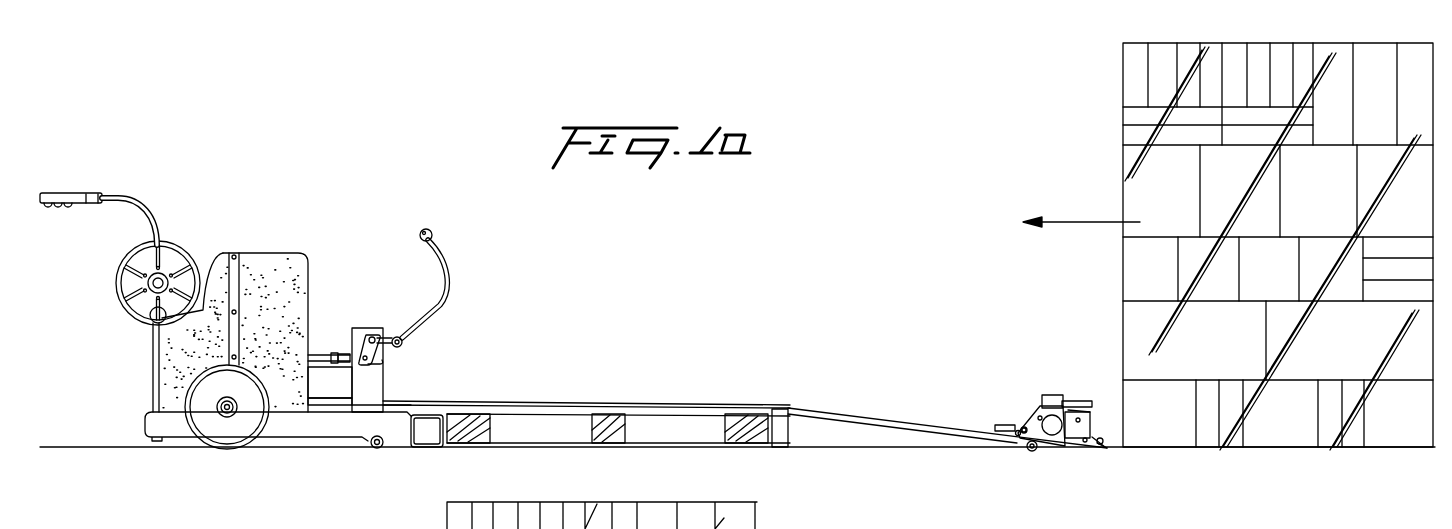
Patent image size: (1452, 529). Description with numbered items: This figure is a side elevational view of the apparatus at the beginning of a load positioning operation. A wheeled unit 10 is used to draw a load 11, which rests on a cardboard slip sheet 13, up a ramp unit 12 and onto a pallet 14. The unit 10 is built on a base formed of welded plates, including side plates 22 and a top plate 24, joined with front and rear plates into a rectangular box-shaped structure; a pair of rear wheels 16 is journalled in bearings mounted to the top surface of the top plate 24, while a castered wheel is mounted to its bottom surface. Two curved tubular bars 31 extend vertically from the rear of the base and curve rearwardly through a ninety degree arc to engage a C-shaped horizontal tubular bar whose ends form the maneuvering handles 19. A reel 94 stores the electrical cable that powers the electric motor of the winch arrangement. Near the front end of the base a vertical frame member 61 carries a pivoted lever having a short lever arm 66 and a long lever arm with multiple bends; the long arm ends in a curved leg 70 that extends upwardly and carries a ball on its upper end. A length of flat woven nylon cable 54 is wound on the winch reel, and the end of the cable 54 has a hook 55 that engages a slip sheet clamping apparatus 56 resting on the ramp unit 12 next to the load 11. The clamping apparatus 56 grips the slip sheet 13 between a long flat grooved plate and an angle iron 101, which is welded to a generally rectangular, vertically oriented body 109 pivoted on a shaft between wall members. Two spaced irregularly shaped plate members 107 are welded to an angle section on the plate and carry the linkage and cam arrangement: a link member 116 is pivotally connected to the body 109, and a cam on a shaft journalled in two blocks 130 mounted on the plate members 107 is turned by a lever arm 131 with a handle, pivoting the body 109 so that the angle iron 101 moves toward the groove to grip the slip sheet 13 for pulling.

The unit 10 is at (602, 317).
The load 11 is at (1127, 152).
The ramp unit 12 is at (832, 433).
The cardboard slip sheet 13 is at (1108, 441).
The pallet 14 is at (613, 413).
The rear wheels 16 is at (242, 428).
The maneuvering handles 19 is at (88, 195).
The side plates 22 is at (318, 428).
The top plate 24 is at (368, 410).
The curved tubular bars 31 is at (155, 368).
The flat cable 54 is at (452, 405).
The hook 55 is at (1020, 434).
The slip sheet clamping apparatus 56 is at (1052, 409).
The vertical frame member 61 is at (375, 377).
The short lever arm 66 is at (363, 333).
The curved leg 70 is at (452, 270).
The reel 94 is at (130, 290).
The angle iron 101 is at (1102, 455).
The irregularly shaped plate members 107 is at (1023, 418).
The body 109 is at (1092, 420).
The link member 116 is at (1068, 401).
The blocks 130 is at (1050, 394).
The lever arm 131 is at (1088, 400).